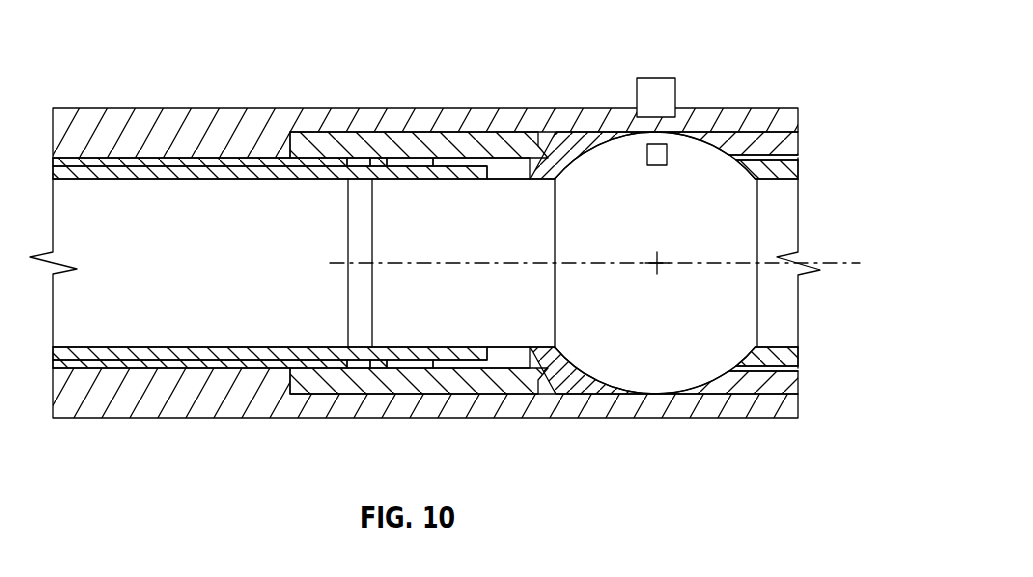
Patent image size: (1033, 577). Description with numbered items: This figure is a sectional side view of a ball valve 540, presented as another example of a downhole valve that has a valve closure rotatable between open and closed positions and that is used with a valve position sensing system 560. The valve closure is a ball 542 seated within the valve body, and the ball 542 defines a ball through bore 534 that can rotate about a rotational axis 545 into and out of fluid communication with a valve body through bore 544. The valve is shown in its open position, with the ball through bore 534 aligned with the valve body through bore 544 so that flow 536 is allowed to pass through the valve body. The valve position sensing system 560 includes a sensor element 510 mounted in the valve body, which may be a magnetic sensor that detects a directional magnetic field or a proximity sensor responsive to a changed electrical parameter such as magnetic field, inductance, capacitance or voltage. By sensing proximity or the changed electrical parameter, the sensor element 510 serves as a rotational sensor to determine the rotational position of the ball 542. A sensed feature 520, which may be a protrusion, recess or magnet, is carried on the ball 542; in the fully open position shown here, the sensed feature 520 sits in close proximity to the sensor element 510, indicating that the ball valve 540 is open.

The sensor element 510 is at (657, 93).
The sensed feature 520 is at (667, 153).
The ball through bore 534 is at (622, 181).
The flow 536 is at (818, 288).
The ball valve 540 is at (717, 42).
The ball 542 is at (687, 370).
The valve body through bore 544 is at (507, 181).
The rotational axis 545 is at (663, 260).
The valve position sensing system 560 is at (766, 73).